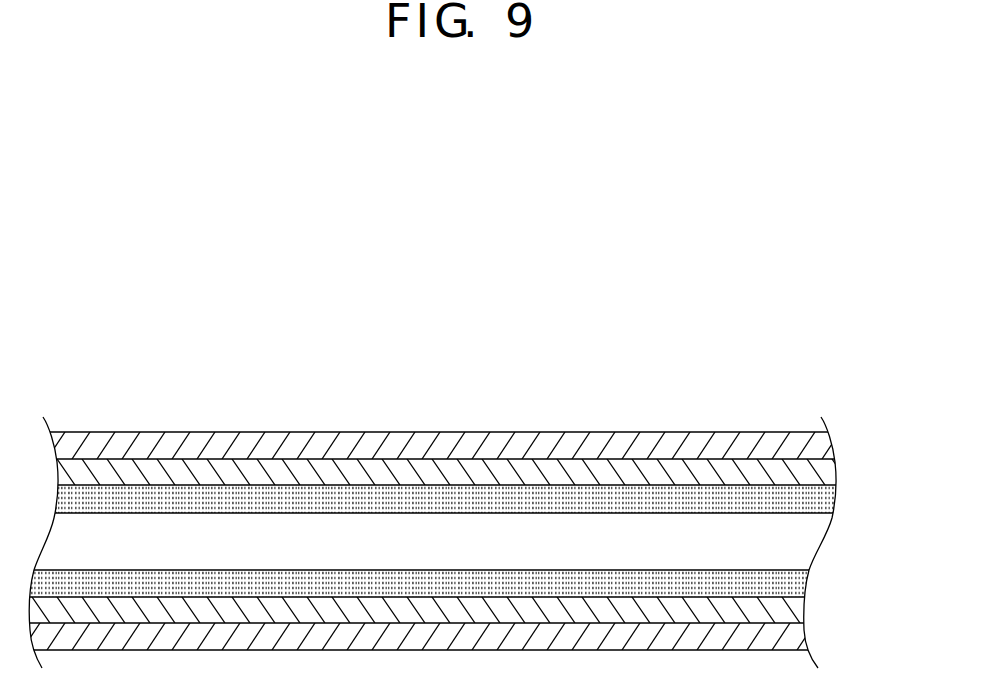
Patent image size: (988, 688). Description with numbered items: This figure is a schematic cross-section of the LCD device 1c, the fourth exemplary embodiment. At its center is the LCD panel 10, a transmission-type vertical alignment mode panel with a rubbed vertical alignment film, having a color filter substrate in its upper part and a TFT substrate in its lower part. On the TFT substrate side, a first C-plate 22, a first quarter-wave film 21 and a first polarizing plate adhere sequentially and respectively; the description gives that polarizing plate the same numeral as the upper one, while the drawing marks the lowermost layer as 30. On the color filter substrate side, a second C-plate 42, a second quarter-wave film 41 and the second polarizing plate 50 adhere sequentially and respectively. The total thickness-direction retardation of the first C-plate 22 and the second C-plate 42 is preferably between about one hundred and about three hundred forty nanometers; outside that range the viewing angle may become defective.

The LCD device 1c is at (107, 355).
The LCD panel 10 is at (815, 540).
The first λ/4 film 21 is at (805, 610).
The first C-plate 22 is at (805, 580).
The lower protective layer 30 is at (805, 640).
The second λ/4 film 41 is at (833, 474).
The second C-plate 42 is at (832, 502).
The polarizing plate 50 is at (827, 443).